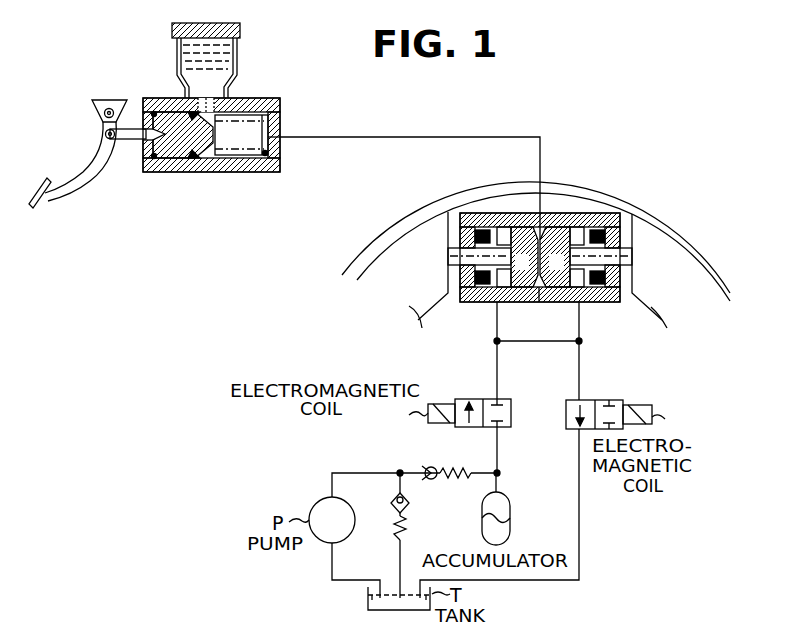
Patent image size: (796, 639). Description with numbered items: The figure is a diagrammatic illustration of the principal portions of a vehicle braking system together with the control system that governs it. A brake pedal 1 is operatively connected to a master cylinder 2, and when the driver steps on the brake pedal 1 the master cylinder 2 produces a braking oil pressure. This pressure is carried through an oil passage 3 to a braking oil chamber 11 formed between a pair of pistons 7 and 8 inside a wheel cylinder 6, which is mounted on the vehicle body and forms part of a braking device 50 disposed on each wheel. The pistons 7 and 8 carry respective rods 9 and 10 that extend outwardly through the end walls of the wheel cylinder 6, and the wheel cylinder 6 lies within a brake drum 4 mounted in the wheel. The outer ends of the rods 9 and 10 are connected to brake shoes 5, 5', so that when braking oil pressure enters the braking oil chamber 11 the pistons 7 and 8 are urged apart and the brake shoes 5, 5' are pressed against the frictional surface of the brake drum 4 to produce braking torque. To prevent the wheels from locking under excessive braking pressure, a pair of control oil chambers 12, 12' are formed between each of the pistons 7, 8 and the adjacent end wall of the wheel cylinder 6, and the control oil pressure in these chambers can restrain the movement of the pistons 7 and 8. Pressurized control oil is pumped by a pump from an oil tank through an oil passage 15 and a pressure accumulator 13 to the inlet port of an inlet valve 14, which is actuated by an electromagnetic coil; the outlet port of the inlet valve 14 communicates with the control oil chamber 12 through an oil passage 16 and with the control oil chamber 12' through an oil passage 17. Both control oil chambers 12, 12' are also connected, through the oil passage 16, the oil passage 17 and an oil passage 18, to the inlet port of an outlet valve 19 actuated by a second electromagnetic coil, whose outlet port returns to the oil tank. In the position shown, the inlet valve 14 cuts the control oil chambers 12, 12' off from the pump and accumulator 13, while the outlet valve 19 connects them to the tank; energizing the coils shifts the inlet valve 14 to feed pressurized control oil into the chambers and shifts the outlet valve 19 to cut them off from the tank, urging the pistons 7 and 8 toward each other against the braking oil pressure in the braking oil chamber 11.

The brake pedal 1 is at (45, 191).
The master cylinder 2 is at (213, 172).
The oil passage 3 is at (365, 137).
The brake drum 4 is at (397, 228).
The brake shoe 5 is at (428, 272).
The brake shoe 5' is at (644, 273).
The wheel cylinder 6 is at (591, 213).
The piston 7 is at (524, 257).
The piston 8 is at (555, 257).
The rod 9 is at (456, 258).
The rod 10 is at (620, 261).
The braking oil chamber 11 is at (539, 302).
The control oil chamber 12 is at (504, 221).
The control oil chamber 12' is at (576, 221).
The pressure accumulator 13 is at (510, 523).
The inlet valve 14 is at (461, 399).
The oil passage 15 is at (360, 473).
The oil passage 16 is at (497, 374).
The oil passage 17 is at (546, 341).
The oil passage 18 is at (579, 361).
The outlet valve 19 is at (585, 400).
The braking device 50 is at (567, 142).